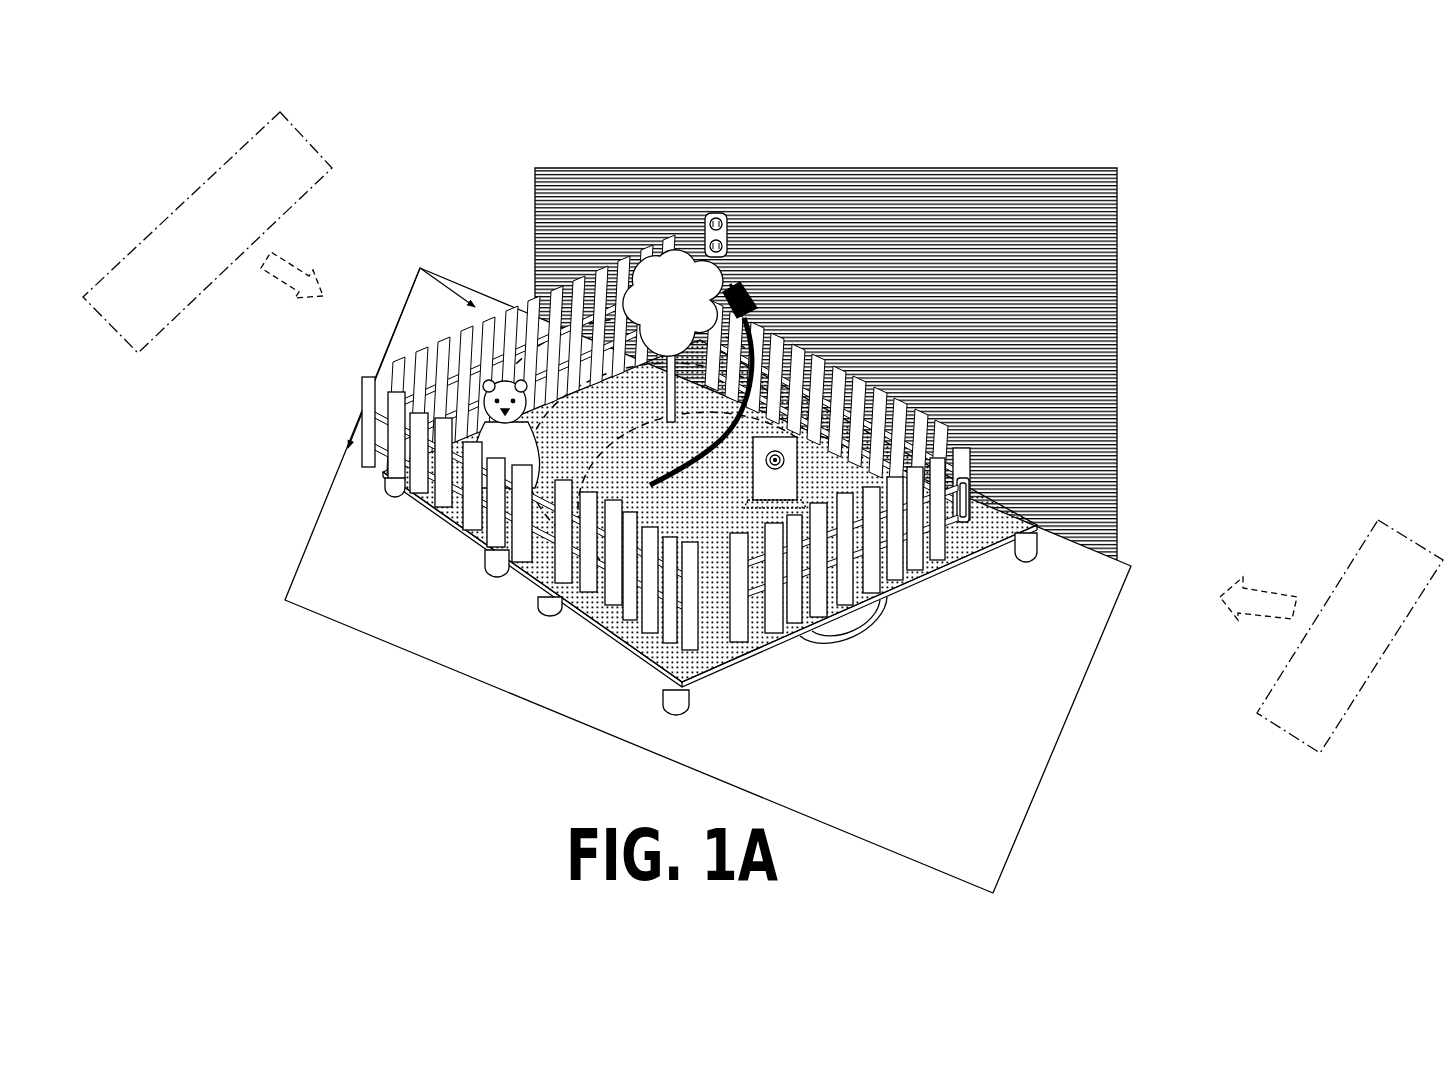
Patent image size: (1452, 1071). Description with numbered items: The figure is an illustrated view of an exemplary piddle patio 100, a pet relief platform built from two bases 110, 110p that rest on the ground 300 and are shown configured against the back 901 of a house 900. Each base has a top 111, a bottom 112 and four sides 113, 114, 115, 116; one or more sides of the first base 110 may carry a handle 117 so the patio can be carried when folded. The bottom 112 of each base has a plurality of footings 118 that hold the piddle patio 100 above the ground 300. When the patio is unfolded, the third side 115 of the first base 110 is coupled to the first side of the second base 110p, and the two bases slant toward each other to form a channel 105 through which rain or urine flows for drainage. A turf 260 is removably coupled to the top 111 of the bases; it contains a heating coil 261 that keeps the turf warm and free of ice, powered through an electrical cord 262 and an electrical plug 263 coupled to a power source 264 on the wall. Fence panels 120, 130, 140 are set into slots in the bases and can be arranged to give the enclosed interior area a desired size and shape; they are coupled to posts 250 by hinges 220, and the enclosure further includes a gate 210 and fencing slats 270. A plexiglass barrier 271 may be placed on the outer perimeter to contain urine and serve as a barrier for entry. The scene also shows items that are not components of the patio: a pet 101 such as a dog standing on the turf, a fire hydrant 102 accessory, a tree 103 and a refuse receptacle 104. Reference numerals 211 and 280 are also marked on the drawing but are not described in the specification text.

The piddle patio 100 is at (794, 58).
The pet 101 is at (411, 349).
The fire hydrant 102 is at (832, 341).
The tree 103 is at (633, 258).
The refuse receptacle 104 is at (802, 551).
The channel 105 is at (375, 374).
The base 110 is at (1124, 737).
The second base 110p is at (363, 316).
The top 111 is at (378, 468).
The bottom 112 is at (428, 523).
The first side 113 is at (583, 621).
The second side 114 is at (411, 498).
The third side 115 is at (375, 420).
The fourth side 116 is at (972, 492).
The handle 117 is at (930, 575).
The footing 118 is at (376, 487).
The fence panel 120 is at (476, 298).
The fence panel 130 is at (924, 400).
The fence panel 140 is at (898, 563).
The gate 210 is at (813, 353).
The post 211 is at (790, 408).
The hinge 220 is at (1050, 592).
The post 250 is at (975, 448).
The turf 260 is at (455, 535).
The heating coil 261 is at (576, 391).
The electrical cord 262 is at (746, 280).
The electrical plug 263 is at (720, 211).
The power source 264 is at (732, 275).
The fencing slat 270 is at (1380, 518).
The plexiglass barrier 271 is at (186, 192).
The dome sensor 280 is at (863, 624).
The ground 300 is at (1130, 584).
The house 900 is at (1122, 197).
The back 901 is at (1086, 273).